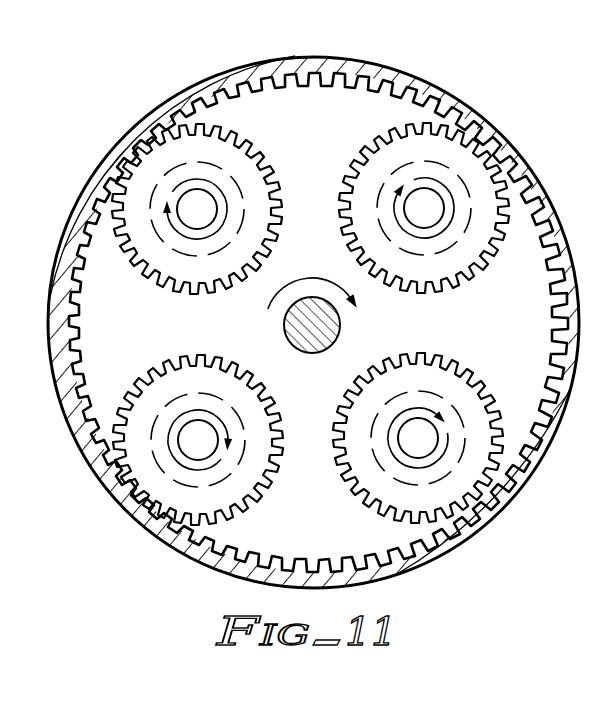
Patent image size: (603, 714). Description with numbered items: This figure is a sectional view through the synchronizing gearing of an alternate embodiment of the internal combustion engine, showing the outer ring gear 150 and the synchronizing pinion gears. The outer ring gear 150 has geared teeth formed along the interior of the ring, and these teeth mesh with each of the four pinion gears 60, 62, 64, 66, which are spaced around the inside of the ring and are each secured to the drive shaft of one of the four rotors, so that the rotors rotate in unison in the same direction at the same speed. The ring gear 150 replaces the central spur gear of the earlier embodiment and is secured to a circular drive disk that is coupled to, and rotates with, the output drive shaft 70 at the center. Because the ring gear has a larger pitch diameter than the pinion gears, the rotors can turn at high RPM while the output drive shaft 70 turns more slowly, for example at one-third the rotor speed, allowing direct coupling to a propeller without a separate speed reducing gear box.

The outer ring gear 150 is at (353, 68).
The pinion gear 60 is at (176, 288).
The pinion gear 66 is at (468, 270).
The pinion gear 62 is at (282, 376).
The pinion gear 64 is at (455, 376).
The output drive shaft 70 is at (327, 330).